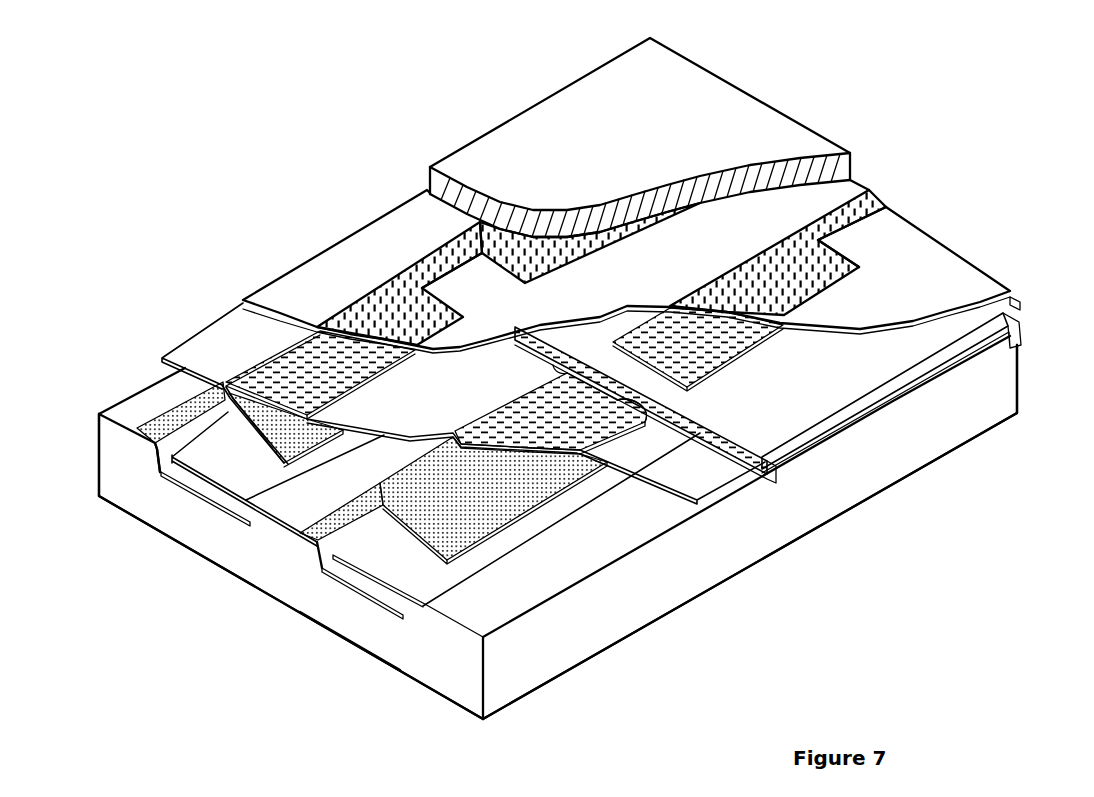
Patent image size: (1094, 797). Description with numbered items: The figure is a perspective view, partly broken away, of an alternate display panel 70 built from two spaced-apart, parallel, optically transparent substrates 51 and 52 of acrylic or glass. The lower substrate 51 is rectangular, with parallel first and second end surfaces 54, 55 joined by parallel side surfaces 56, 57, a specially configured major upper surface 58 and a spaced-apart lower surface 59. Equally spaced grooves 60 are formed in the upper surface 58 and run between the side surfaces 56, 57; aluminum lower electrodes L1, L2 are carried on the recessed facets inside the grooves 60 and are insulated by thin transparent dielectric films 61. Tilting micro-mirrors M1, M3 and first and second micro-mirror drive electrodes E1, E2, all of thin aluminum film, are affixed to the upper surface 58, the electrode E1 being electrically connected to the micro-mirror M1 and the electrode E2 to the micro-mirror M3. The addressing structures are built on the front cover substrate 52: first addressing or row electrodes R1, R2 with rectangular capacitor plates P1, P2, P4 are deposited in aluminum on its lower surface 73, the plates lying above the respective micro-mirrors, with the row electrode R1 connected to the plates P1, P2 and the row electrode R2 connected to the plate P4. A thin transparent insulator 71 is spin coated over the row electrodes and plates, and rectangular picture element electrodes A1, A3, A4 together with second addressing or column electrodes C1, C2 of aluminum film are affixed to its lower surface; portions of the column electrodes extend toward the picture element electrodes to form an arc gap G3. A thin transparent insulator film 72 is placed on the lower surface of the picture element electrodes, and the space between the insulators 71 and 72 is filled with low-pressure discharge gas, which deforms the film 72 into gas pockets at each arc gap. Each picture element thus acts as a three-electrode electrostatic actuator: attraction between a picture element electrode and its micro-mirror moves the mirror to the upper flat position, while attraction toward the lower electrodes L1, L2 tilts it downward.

The substrate 51 is at (247, 592).
The front cover substrate 52 is at (725, 110).
The first end surface 54 is at (99, 457).
The second end surface 55 is at (511, 667).
The side surface 56 is at (466, 678).
The side surface 57 is at (1022, 371).
The major upper surface 58 is at (158, 391).
The lower surface 59 is at (394, 669).
The grooves 60 is at (147, 467).
The transparent dielectric films 61 is at (247, 518).
The display panel 70 is at (282, 176).
The transparent insulator 71 is at (336, 272).
The transparent insulator film 72 is at (237, 346).
The lower surface 73 is at (858, 190).
The first micro-mirror drive electrode E1 is at (168, 455).
The second micro-mirror drive electrode E2 is at (318, 550).
The lower electrode L1 is at (216, 484).
The lower electrode L2 is at (360, 591).
The tilting micro-mirror M1 is at (288, 443).
The tilting micro-mirror M3 is at (473, 498).
The picture element electrode A1 is at (319, 358).
The picture element electrode A3 is at (530, 420).
The picture element electrode A4 is at (793, 378).
The arc gap G3 is at (628, 425).
The column electrode C1 is at (777, 482).
The column electrode C2 is at (1008, 348).
The capacitor plate P1 is at (338, 272).
The capacitor plate P2 is at (458, 225).
The capacitor plate P4 is at (800, 272).
The row electrode R1 is at (436, 262).
The row electrode R2 is at (788, 300).